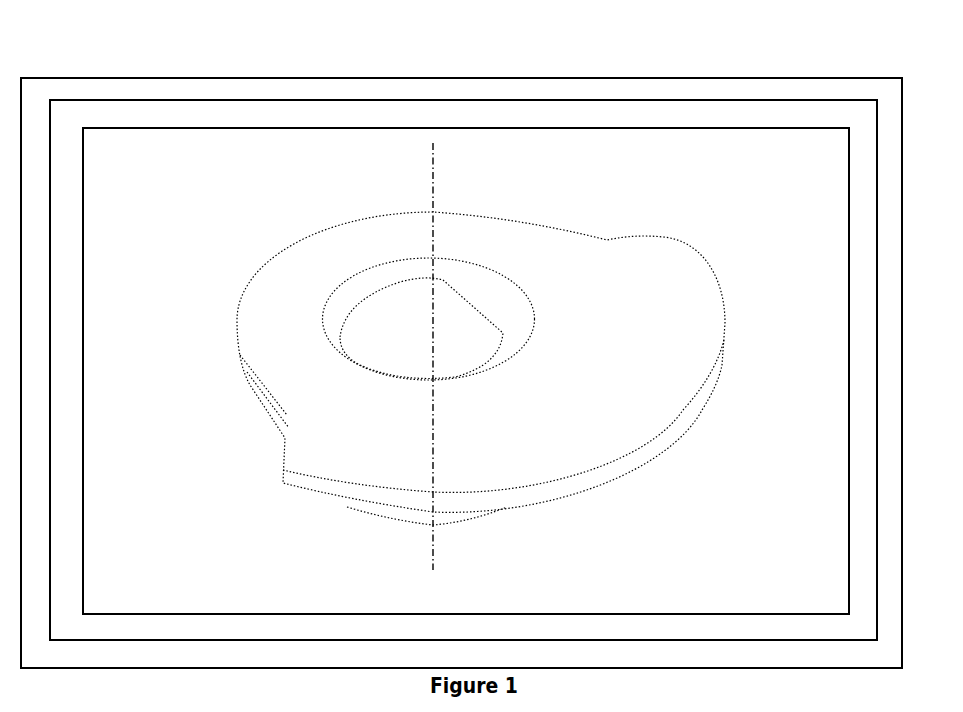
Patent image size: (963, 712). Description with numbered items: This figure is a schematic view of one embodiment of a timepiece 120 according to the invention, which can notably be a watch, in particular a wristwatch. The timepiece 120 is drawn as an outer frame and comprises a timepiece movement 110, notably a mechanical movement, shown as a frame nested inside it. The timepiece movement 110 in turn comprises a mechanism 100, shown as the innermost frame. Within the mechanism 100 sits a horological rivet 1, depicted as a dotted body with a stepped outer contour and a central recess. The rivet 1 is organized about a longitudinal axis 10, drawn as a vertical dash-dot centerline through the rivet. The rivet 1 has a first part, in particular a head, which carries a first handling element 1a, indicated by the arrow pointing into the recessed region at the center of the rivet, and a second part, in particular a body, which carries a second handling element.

The horological rivet 1 is at (608, 255).
The first handling element 1a is at (402, 329).
The longitudinal axis 10 is at (424, 182).
The mechanism 100 is at (165, 135).
The timepiece movement 110 is at (241, 103).
The timepiece 120 is at (302, 80).